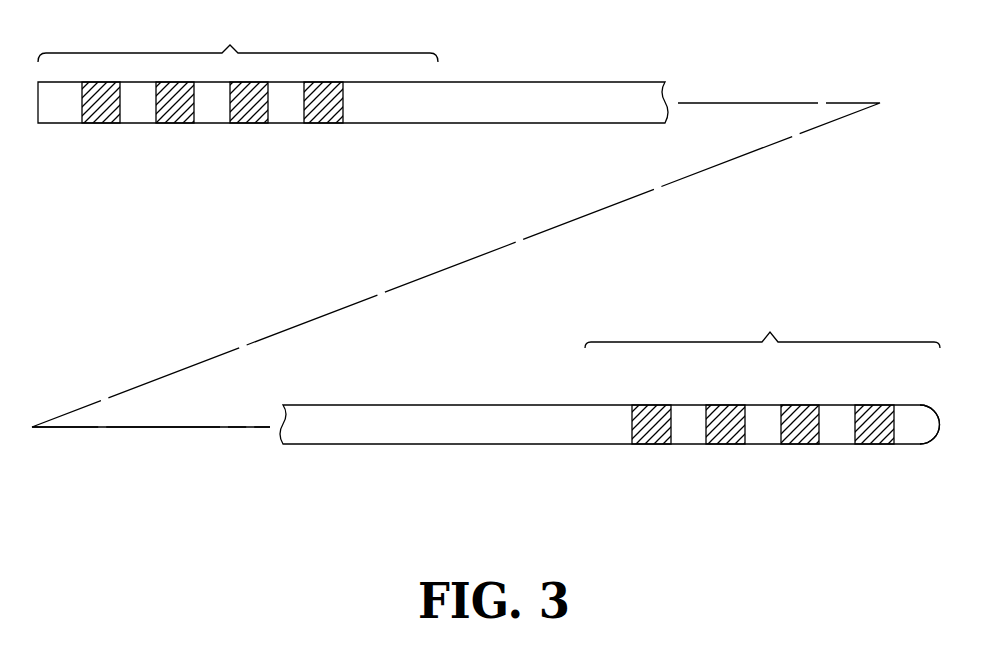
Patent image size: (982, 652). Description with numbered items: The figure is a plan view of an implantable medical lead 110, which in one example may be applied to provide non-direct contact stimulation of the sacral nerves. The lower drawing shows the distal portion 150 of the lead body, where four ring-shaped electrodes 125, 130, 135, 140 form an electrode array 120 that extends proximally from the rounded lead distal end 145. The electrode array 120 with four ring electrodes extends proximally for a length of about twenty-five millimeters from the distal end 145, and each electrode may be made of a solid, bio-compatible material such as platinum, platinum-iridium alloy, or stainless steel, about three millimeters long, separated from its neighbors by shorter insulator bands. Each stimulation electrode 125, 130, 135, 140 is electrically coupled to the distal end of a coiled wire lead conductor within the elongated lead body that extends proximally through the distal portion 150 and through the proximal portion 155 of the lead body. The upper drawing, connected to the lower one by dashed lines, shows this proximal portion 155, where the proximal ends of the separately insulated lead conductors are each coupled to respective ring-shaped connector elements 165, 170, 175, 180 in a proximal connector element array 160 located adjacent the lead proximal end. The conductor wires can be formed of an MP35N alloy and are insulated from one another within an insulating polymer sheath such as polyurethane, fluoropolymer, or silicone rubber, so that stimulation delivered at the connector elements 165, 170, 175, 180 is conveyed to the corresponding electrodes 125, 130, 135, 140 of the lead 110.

The implantable medical lead 110 is at (476, 483).
The electrode array 120 is at (794, 466).
The ring-shaped electrode 125 is at (877, 413).
The ring-shaped electrode 130 is at (802, 413).
The ring-shaped electrode 135 is at (727, 413).
The ring-shaped electrode 140 is at (652, 413).
The lead distal end 145 is at (920, 449).
The distal portion 150 is at (762, 324).
The proximal portion 155 is at (238, 38).
The proximal connector element array 160 is at (152, 188).
The ring-shaped connector element 165 is at (323, 123).
The ring-shaped connector element 170 is at (247, 123).
The ring-shaped connector element 175 is at (177, 123).
The ring-shaped connector element 180 is at (102, 123).